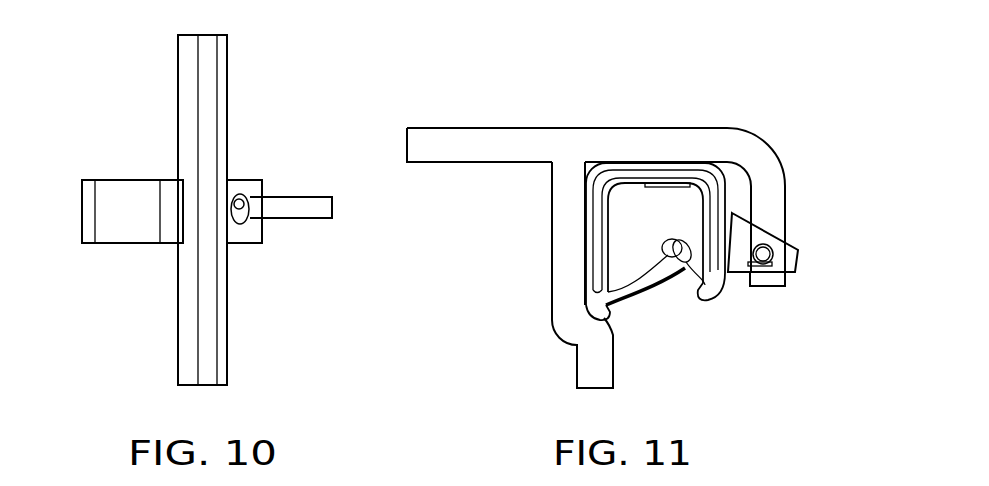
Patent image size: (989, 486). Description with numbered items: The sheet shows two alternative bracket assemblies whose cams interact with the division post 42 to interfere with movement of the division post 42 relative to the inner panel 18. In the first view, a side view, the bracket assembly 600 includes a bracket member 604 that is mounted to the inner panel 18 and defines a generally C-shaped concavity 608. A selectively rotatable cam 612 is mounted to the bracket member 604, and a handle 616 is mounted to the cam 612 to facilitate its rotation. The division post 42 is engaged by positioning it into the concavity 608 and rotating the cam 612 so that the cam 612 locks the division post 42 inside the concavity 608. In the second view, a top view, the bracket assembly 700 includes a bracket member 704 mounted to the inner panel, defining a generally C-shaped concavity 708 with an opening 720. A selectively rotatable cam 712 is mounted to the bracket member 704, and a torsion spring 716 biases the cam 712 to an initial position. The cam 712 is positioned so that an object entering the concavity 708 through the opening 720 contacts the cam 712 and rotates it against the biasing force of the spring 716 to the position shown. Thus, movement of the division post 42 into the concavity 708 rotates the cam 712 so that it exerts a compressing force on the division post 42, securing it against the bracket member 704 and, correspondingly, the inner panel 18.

In FIG. 10, the bracket assembly 600 is at (100, 82).
In FIG. 10, the division post 42 is at (222, 94).
In FIG. 11, the division post 42 is at (715, 202).
In FIG. 10, the inner panel 18 is at (85, 214).
In FIG. 10, the bracket member 604 is at (130, 217).
In FIG. 10, the concavity 608 is at (192, 196).
In FIG. 10, the handle 616 is at (284, 197).
In FIG. 10, the cam 612 is at (238, 223).
In FIG. 11, the bracket assembly 700 is at (724, 94).
In FIG. 11, the bracket member 704 is at (482, 140).
In FIG. 11, the concavity 708 is at (598, 215).
In FIG. 11, the cam 712 is at (740, 233).
In FIG. 11, the torsion spring 716 is at (792, 257).
In FIG. 11, the opening 720 is at (613, 334).